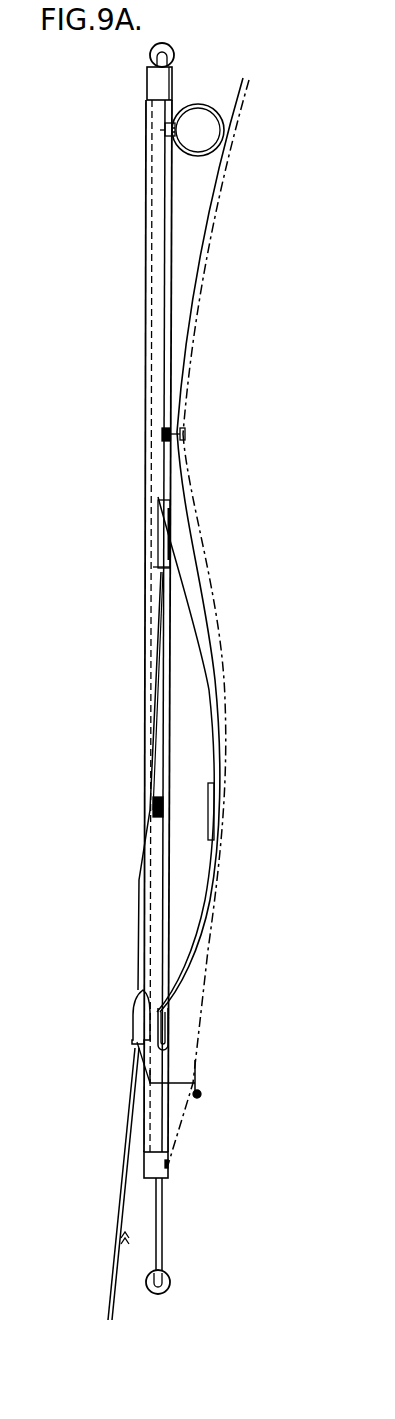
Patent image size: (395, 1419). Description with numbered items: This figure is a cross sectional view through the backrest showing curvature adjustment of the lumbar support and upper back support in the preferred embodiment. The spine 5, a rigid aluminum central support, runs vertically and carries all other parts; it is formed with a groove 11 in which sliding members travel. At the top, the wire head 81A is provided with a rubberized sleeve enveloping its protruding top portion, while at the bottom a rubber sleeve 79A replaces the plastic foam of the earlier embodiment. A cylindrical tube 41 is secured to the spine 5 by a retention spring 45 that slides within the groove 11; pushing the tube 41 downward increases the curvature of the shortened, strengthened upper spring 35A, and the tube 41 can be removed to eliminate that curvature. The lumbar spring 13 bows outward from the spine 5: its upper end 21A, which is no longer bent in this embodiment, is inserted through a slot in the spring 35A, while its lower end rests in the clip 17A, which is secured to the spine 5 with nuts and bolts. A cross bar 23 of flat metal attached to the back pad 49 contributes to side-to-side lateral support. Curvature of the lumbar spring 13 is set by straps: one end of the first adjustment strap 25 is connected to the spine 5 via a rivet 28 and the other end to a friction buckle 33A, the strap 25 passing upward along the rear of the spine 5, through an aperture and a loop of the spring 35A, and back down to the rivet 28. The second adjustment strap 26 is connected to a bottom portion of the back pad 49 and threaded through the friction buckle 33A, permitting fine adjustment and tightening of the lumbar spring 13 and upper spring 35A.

The spine 5 is at (145, 498).
The groove 11 is at (166, 297).
The lumbar spring 13 is at (204, 917).
The clip 17A is at (165, 1026).
The upper clip 21A is at (149, 510).
The cross bar 23 is at (210, 795).
The first adjustment strap 25 is at (142, 863).
The second adjustment strap 26 is at (117, 1272).
The rivet 28 is at (167, 800).
The friction buckle 33A is at (138, 1017).
The spring 35A is at (183, 433).
The cylindrical tube 41 is at (199, 104).
The retention spring 45 is at (156, 147).
The back pad 49 is at (216, 196).
The rubber sleeve 79A is at (172, 1288).
The wire head 81A is at (174, 46).